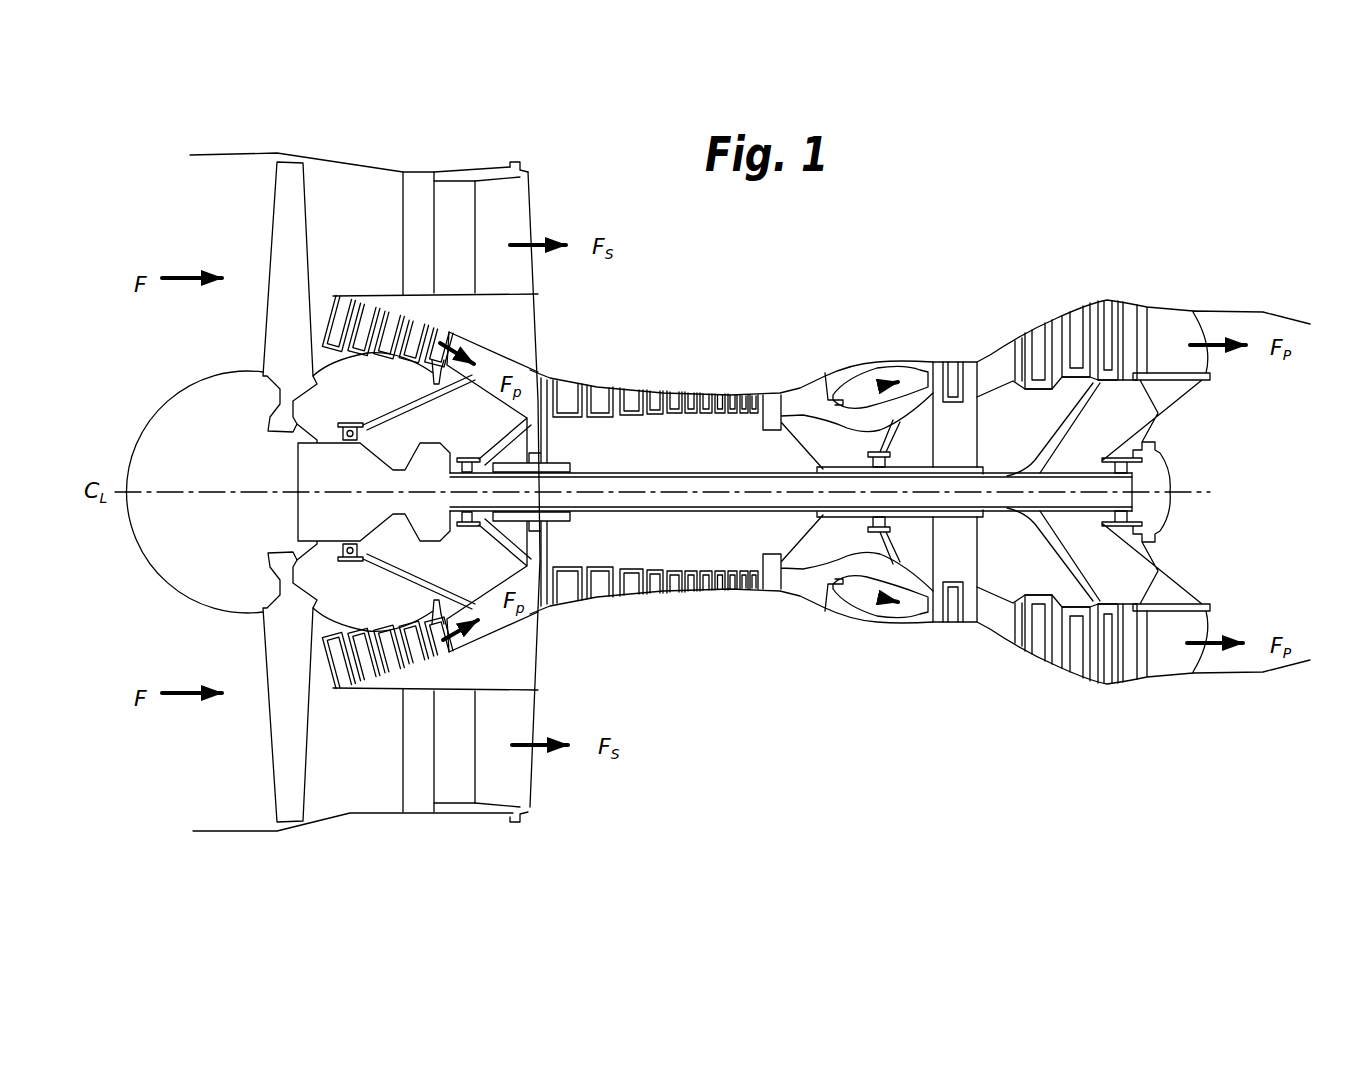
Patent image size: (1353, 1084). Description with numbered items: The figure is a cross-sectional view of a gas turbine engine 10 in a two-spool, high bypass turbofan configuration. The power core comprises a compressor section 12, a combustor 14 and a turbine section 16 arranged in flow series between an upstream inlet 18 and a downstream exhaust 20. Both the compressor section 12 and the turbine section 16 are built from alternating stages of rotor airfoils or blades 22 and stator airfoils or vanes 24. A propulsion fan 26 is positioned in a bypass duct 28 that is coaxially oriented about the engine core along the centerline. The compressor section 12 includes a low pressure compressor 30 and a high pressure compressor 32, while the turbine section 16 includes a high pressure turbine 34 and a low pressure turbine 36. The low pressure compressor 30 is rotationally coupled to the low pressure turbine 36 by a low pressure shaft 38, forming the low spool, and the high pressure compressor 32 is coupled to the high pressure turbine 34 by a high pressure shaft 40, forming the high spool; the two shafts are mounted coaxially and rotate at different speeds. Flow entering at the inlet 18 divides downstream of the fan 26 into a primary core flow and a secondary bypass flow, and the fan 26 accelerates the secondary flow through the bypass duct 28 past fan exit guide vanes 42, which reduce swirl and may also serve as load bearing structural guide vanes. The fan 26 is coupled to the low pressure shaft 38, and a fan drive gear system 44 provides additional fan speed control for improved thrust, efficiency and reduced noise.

The gas turbine engine 10 is at (158, 128).
The compressor section 12 is at (778, 840).
The combustor 14 is at (870, 360).
The turbine section 16 is at (1140, 727).
The upstream inlet 18 is at (194, 479).
The downstream exhaust 20 is at (1158, 492).
The rotor airfoils 22 is at (592, 392).
The stator airfoils 24 is at (630, 396).
The propulsion fan 26 is at (287, 238).
The bypass duct 28 is at (436, 471).
The low pressure compressor 30 is at (492, 652).
The high pressure compressor 32 is at (678, 604).
The high pressure turbine 34 is at (962, 630).
The low pressure turbine 36 is at (1035, 670).
The low pressure shaft 38 is at (717, 500).
The high pressure shaft 40 is at (787, 520).
The fan exit guide vanes 42 is at (413, 190).
The fan drive gear system 44 is at (435, 440).